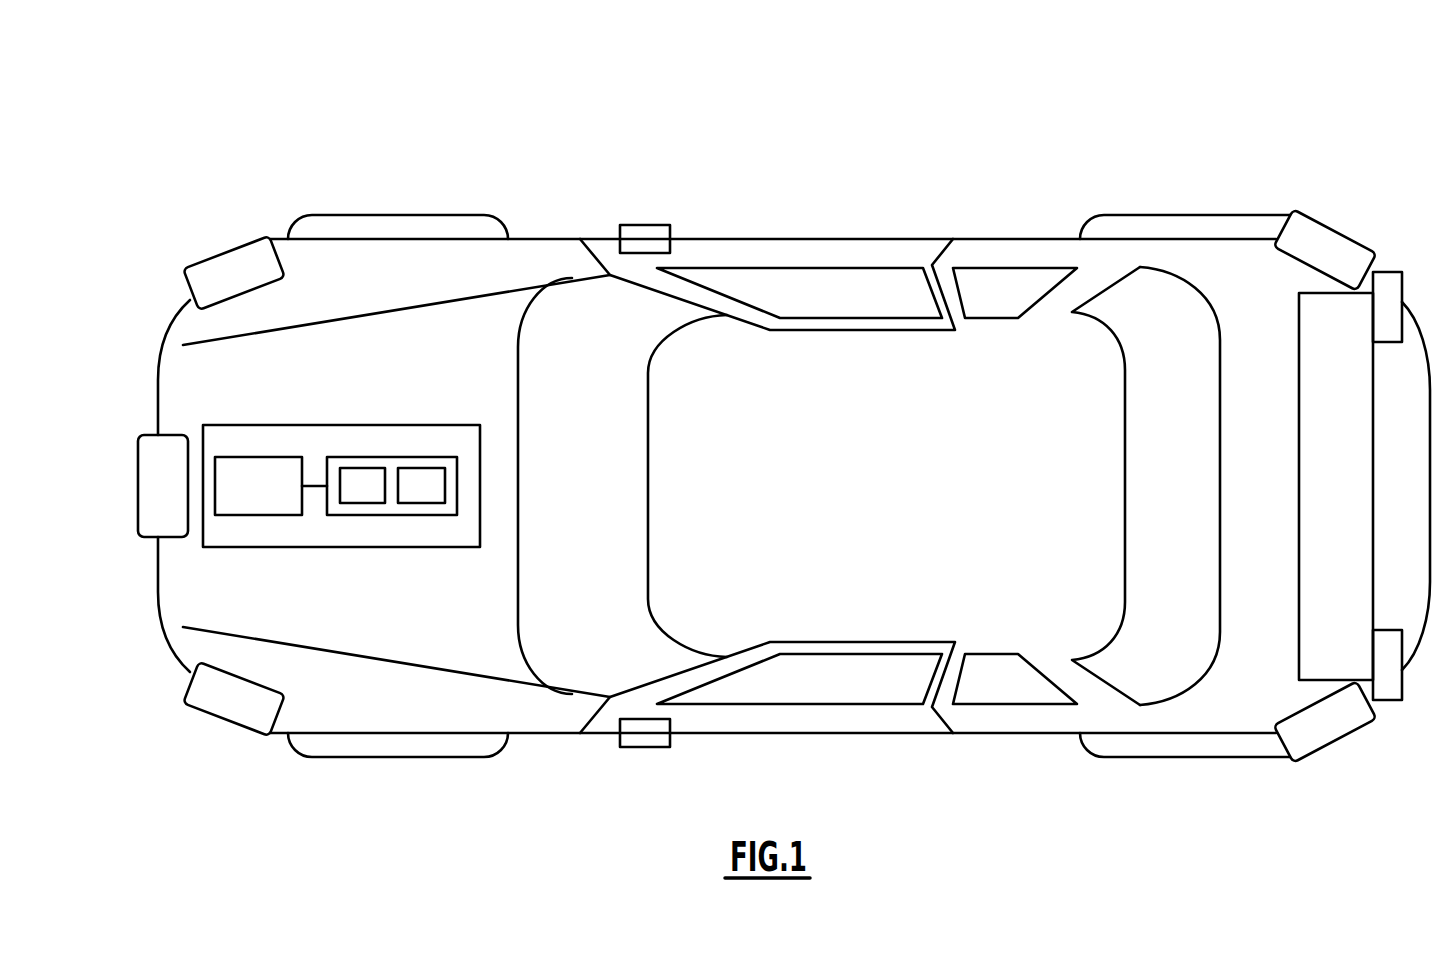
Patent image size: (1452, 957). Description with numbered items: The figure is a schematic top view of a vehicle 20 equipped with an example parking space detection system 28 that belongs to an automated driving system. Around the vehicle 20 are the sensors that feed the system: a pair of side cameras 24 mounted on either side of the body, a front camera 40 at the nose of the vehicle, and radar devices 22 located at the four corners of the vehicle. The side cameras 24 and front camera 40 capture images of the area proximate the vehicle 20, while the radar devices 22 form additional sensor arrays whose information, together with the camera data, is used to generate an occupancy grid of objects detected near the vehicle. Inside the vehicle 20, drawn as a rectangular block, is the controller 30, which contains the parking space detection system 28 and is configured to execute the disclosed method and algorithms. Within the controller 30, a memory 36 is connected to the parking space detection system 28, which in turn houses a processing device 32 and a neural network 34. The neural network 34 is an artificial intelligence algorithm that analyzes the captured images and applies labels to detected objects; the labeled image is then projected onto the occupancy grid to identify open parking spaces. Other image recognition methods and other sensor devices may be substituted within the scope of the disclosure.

The vehicle 20 is at (1326, 119).
The radar devices 22 is at (218, 253).
The side cameras 24 is at (647, 224).
The parking space detection system 28 is at (360, 457).
The controller 30 is at (395, 425).
The processing device 32 is at (360, 493).
The neural network 34 is at (418, 493).
The memory 36 is at (262, 457).
The front camera 40 is at (142, 437).